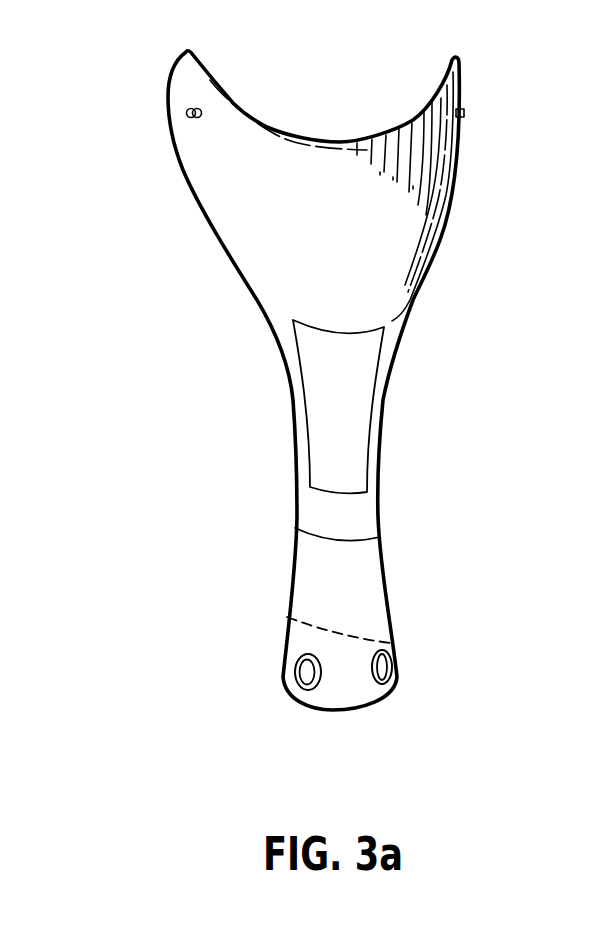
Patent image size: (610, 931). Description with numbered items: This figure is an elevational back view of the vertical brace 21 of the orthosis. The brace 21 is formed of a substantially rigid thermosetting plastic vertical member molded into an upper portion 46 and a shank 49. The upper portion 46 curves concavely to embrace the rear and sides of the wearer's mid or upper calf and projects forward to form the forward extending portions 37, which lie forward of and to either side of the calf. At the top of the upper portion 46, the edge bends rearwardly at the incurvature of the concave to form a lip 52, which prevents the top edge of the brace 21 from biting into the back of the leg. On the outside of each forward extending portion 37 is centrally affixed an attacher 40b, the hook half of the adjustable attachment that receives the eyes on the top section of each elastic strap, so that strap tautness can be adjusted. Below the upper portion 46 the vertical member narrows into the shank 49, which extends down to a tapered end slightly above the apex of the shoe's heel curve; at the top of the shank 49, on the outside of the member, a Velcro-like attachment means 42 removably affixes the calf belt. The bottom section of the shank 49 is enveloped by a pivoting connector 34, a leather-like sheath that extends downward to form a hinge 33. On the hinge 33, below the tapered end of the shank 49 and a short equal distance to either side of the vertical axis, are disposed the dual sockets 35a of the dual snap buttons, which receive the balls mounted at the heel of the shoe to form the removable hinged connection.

The brace 21 is at (428, 325).
The lip 52 is at (347, 140).
The forward extending portions 37 is at (222, 196).
The upper portion 46 is at (385, 273).
The attacher 40b is at (186, 113).
The attachment means 42 is at (343, 421).
The shank 49 is at (398, 561).
The pivoting connector 34 is at (360, 582).
The hinge 33 is at (390, 641).
The dual sockets 35a is at (367, 680).